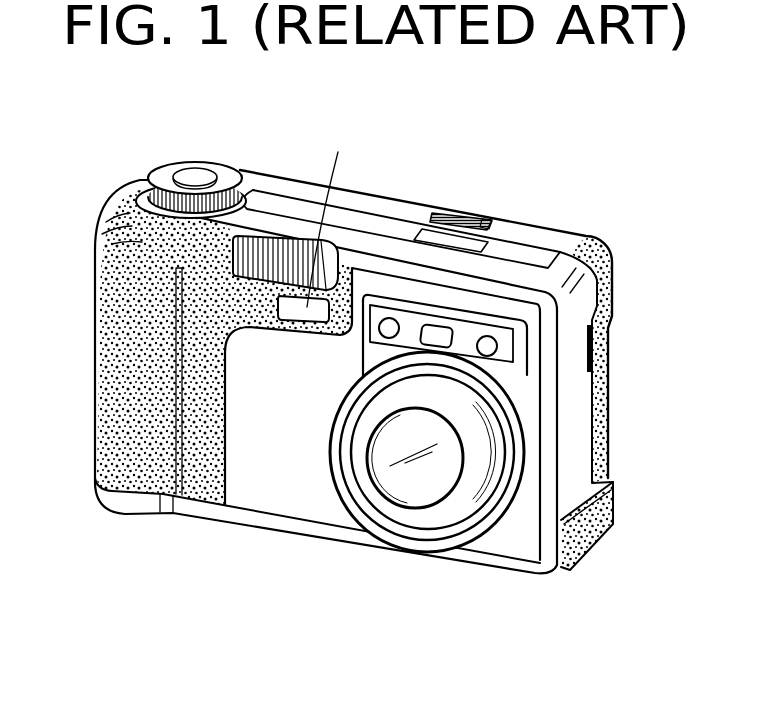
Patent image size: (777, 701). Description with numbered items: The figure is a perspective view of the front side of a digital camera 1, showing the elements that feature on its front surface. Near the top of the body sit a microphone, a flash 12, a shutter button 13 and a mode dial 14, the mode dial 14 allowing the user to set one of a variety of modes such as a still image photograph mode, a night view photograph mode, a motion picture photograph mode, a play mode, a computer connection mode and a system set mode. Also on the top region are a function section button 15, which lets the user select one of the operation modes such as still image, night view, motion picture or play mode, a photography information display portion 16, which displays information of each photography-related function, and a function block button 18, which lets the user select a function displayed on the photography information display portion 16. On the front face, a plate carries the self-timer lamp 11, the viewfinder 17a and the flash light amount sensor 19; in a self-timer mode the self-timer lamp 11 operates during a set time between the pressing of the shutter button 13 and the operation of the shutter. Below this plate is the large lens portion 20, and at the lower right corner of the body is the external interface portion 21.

The digital camera 1 is at (391, 386).
The self-timer lamp 11 is at (389, 325).
The flash 12 is at (280, 250).
The shutter button 13 is at (197, 172).
The mode dial 14 is at (161, 177).
The function section button 15 is at (448, 211).
The photography information display portion 16 is at (457, 238).
The viewfinder 17a is at (443, 333).
The function block button 18 is at (487, 217).
The flash light amount sensor 19 is at (498, 346).
The lens portion 20 is at (443, 461).
The external interface portion 21 is at (604, 507).